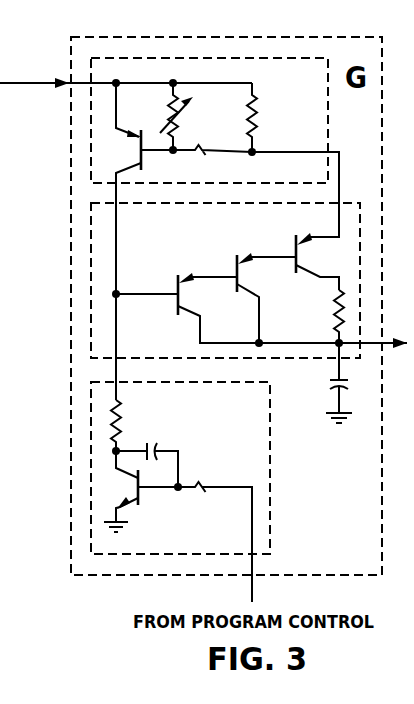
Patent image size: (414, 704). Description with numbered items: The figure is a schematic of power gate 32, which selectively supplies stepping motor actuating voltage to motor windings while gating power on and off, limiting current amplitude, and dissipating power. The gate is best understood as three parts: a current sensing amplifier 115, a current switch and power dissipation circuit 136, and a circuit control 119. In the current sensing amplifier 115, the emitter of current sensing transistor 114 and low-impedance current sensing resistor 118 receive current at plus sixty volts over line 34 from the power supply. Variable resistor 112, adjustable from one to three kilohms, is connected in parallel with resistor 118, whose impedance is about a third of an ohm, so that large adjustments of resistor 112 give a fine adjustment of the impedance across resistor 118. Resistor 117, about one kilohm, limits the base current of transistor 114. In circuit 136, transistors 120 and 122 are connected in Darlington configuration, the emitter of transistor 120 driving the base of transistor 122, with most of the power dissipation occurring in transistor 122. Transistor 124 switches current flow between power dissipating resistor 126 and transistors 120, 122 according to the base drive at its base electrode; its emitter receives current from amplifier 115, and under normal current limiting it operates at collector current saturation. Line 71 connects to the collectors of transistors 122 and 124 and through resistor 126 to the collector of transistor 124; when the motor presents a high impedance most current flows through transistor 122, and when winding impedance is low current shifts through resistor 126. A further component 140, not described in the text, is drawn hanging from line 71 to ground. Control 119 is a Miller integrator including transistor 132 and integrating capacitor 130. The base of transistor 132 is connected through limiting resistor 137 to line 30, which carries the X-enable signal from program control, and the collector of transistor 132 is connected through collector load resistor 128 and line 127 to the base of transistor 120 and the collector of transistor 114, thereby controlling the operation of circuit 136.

The power gate 32 is at (172, 37).
The line 34 is at (80, 83).
The current sensing amplifier 115 is at (276, 58).
The variable resistor 112 is at (169, 106).
The current sensing resistor 118 is at (256, 106).
The current sensing transistor 114 is at (132, 188).
The base current limiting resistor 117 is at (217, 151).
The current switch and power dissipation circuit 136 is at (344, 203).
The line 127 is at (118, 240).
The transistor 120 is at (186, 294).
The transistor 122 is at (238, 272).
The transistor 124 is at (298, 256).
The power dissipating resistor 126 is at (333, 313).
The line 71 is at (388, 340).
The capacitor 140 is at (330, 381).
The collector load resistor 128 is at (122, 406).
The integrating capacitor 130 is at (157, 447).
The transistor 132 is at (136, 487).
The limiting resistor 137 is at (208, 487).
The circuit control 119 is at (270, 481).
The line 30 is at (266, 567).